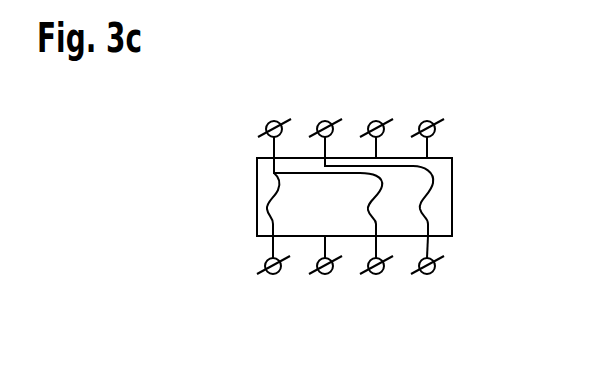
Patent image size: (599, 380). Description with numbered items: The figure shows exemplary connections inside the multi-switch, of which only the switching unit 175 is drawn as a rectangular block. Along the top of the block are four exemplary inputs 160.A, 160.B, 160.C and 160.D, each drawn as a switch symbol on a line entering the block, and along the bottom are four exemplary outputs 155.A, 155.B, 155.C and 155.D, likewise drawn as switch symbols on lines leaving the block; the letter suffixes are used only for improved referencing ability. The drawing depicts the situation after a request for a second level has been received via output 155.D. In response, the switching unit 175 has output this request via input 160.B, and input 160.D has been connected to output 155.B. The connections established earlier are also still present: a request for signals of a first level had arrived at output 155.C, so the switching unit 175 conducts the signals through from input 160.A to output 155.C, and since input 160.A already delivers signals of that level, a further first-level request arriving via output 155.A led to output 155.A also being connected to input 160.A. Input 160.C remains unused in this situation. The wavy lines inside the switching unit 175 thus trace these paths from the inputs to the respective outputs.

The switching unit 175 is at (452, 195).
The input 160.A is at (274, 121).
The input 160.B is at (325, 121).
The input 160.C is at (376, 121).
The input 160.D is at (427, 121).
The output 155.A is at (273, 274).
The output 155.B is at (325, 274).
The output 155.C is at (376, 274).
The output 155.D is at (427, 274).